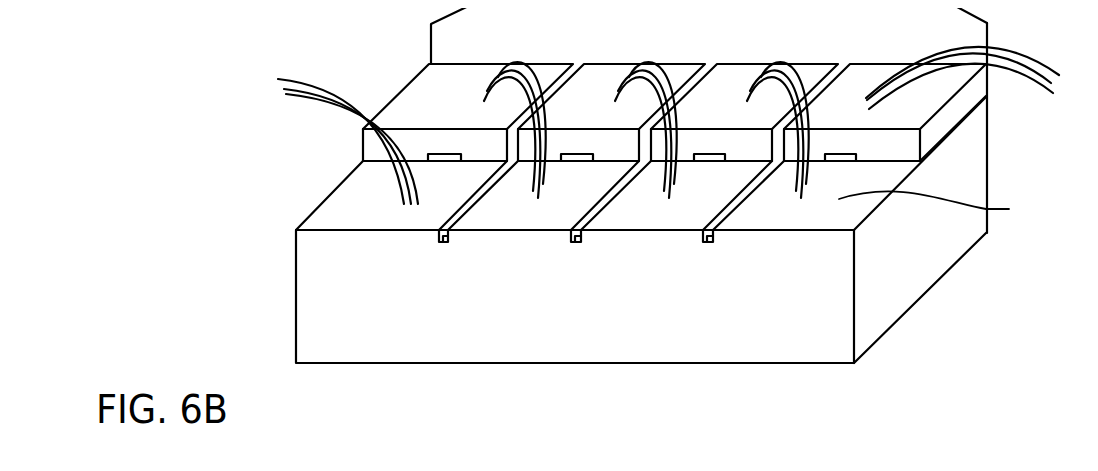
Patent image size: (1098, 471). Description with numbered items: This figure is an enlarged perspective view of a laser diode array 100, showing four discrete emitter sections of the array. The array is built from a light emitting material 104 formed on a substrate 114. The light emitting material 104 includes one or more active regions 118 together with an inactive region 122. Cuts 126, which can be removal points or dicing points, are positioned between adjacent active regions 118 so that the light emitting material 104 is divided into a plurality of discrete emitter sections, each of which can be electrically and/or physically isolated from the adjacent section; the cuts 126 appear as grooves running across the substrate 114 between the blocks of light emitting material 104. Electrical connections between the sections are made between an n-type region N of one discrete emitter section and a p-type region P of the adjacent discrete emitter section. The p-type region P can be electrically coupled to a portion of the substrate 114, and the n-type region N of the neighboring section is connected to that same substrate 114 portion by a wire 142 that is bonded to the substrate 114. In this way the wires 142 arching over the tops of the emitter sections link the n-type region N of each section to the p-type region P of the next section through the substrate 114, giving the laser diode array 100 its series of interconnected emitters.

The laser diode array 100 is at (644, 185).
The light emitting material 104 is at (982, 90).
The substrate 114 is at (892, 313).
The active region 118 is at (433, 152).
The inactive region 122 is at (454, 101).
The cut 126 is at (441, 243).
The wire 142 is at (783, 72).
The n-type region N is at (752, 72).
The p-type region P is at (934, 206).